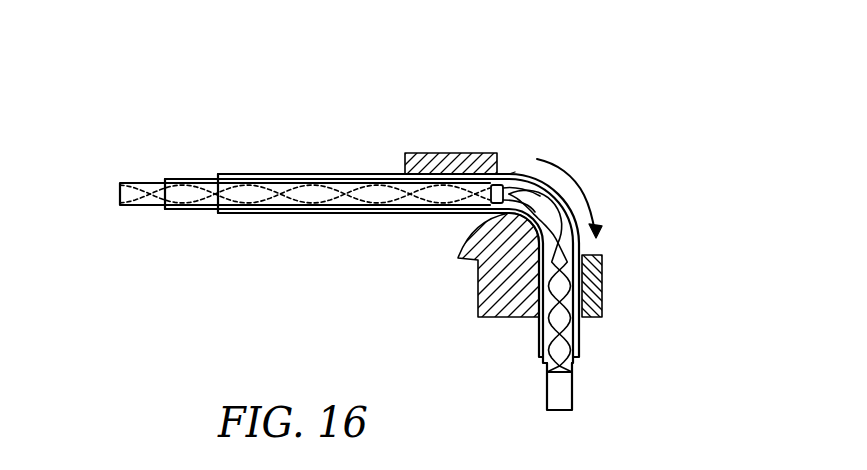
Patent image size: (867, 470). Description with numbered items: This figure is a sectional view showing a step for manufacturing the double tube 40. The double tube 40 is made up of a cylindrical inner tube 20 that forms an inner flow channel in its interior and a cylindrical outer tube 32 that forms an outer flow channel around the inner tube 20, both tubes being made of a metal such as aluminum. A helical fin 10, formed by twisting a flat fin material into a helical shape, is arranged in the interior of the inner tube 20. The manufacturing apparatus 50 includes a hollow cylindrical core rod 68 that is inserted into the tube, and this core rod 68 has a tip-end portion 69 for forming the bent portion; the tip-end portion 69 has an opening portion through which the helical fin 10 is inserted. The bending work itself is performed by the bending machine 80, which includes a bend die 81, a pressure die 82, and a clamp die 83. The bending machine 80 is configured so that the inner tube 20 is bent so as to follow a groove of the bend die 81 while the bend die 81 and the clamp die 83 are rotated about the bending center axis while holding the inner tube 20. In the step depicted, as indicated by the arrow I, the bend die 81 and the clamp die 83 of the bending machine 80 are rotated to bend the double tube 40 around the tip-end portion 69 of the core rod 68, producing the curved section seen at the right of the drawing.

The helical fin 10 is at (138, 180).
The inner tube 20 is at (325, 240).
The outer tube 32 is at (243, 173).
The core rod 68 is at (157, 178).
The tip-end portion 69 is at (490, 185).
The double tube 40 is at (515, 172).
The manufacturing apparatus 50 is at (600, 141).
The bending machine 80 is at (460, 216).
The bend die 81 is at (485, 280).
The pressure die 82 is at (437, 160).
The clamp die 83 is at (605, 285).
The arrow I is at (583, 197).